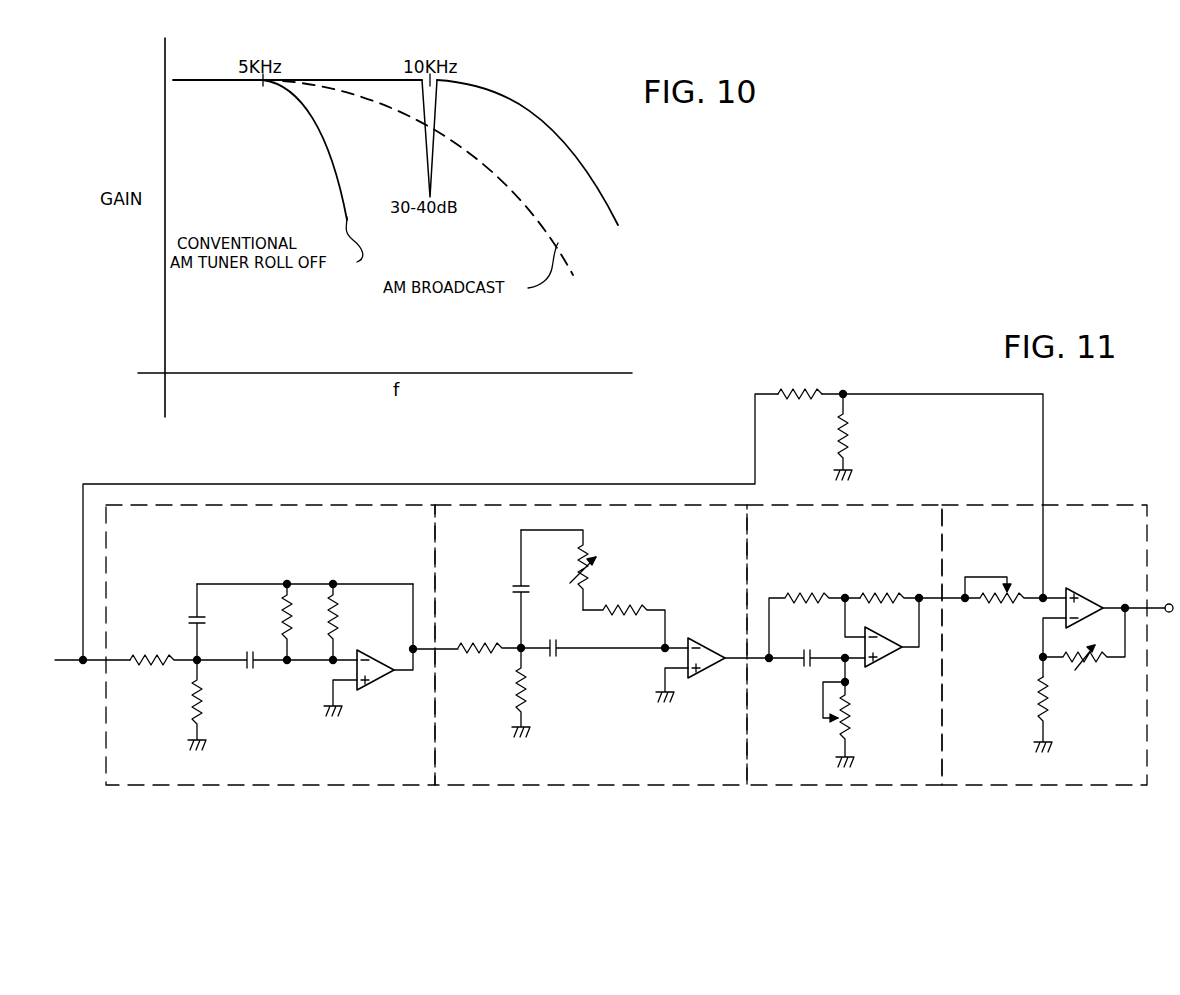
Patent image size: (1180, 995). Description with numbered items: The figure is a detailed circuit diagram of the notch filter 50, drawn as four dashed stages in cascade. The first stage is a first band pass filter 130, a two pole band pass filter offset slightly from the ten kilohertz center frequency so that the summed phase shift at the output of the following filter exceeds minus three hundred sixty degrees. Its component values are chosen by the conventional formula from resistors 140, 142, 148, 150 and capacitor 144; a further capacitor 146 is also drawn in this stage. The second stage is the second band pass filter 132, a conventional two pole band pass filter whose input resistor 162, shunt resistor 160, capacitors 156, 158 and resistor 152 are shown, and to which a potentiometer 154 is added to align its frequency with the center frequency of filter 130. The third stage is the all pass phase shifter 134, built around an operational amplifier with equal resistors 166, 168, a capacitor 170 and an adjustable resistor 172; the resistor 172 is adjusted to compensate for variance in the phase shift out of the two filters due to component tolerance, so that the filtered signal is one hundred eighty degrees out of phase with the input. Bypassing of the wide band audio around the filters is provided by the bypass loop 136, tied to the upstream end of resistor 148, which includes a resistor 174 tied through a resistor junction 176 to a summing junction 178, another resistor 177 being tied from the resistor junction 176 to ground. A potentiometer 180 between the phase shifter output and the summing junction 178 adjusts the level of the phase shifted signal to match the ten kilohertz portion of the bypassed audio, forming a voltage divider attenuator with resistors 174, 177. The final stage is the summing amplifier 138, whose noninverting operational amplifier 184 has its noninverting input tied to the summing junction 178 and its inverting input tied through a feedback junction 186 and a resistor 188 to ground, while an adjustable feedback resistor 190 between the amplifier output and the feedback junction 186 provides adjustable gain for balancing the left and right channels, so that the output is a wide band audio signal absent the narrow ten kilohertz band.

The notch filter 50 is at (348, 470).
The first band pass filter 130 is at (345, 506).
The second band pass filter 132 is at (652, 506).
The all pass phase shifter 134 is at (903, 506).
The bypass loop 136 is at (270, 484).
The summing amplifier 138 is at (1100, 506).
The resistor 140 is at (338, 612).
The resistor 142 is at (283, 612).
The capacitor 144 is at (193, 612).
The capacitor .001 146 is at (255, 672).
The resistor 148 is at (152, 672).
The resistor 150 is at (193, 700).
The resistor 180K 152 is at (622, 620).
The potentiometer 154 is at (590, 554).
The capacitor .001 156 is at (513, 585).
The capacitor .001 158 is at (557, 660).
The resistor 820 160 is at (515, 692).
The resistor 160K 162 is at (480, 664).
The resistor 20K 166 is at (802, 586).
The resistor 20K 168 is at (881, 586).
The capacitor 170 is at (807, 672).
The resistor 172 is at (855, 737).
The resistor 174 is at (790, 392).
The resistor junction 176 is at (846, 392).
The resistor 177 is at (851, 420).
The summing junction 178 is at (1040, 604).
The potentiometer 180 is at (1012, 574).
The noninverting operational amplifier 184 is at (1076, 588).
The feedback junction 186 is at (1040, 660).
The resistor 188 is at (1038, 700).
The adjustable feedback resistor 190 is at (1096, 672).